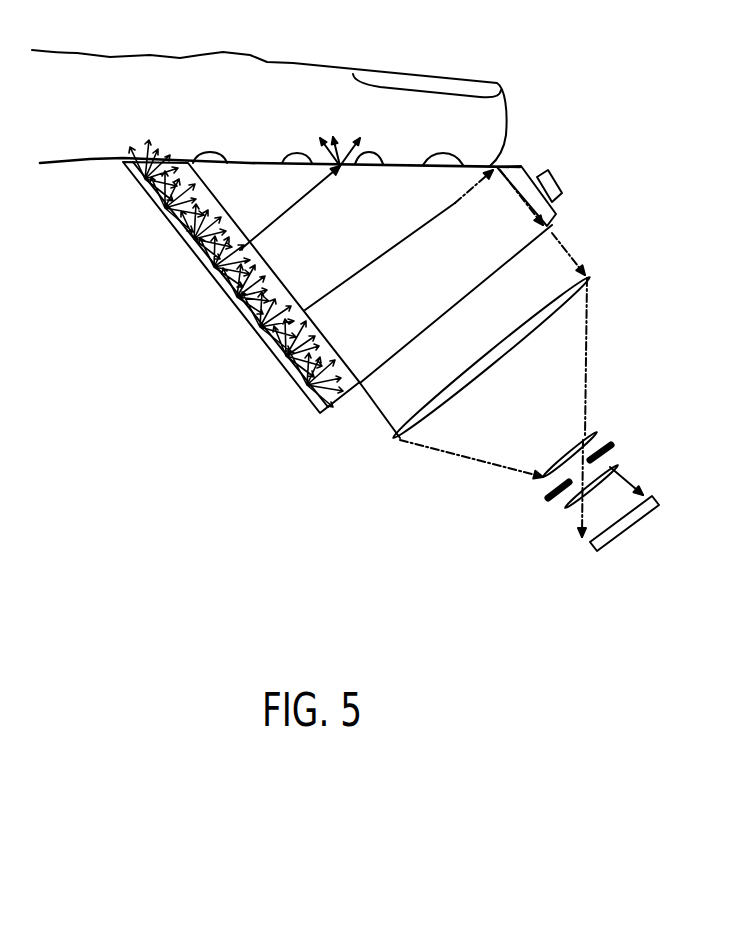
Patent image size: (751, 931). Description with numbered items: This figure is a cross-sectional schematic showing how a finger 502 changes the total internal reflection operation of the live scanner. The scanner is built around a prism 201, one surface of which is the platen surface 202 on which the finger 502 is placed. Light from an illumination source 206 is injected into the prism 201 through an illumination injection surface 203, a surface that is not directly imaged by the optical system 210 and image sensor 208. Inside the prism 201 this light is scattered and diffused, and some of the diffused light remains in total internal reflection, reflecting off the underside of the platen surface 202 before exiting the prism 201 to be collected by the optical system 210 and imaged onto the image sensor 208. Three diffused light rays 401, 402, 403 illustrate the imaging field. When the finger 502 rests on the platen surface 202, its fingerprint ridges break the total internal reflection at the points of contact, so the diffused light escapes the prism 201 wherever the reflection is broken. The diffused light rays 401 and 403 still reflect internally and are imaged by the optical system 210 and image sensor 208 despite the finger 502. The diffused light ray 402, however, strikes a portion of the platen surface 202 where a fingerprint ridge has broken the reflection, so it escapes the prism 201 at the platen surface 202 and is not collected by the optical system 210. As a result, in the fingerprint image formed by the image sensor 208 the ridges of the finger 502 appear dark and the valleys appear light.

The prism 201 is at (399, 323).
The platen surface 202 is at (525, 172).
The illumination injection surface 203 is at (528, 172).
The illumination source 206 is at (562, 189).
The image sensor 208 is at (633, 523).
The optical system 210 is at (598, 248).
The diffused light ray 401 is at (377, 410).
The diffused light ray 402 is at (293, 207).
The diffused light ray 403 is at (430, 210).
The finger 502 is at (293, 63).